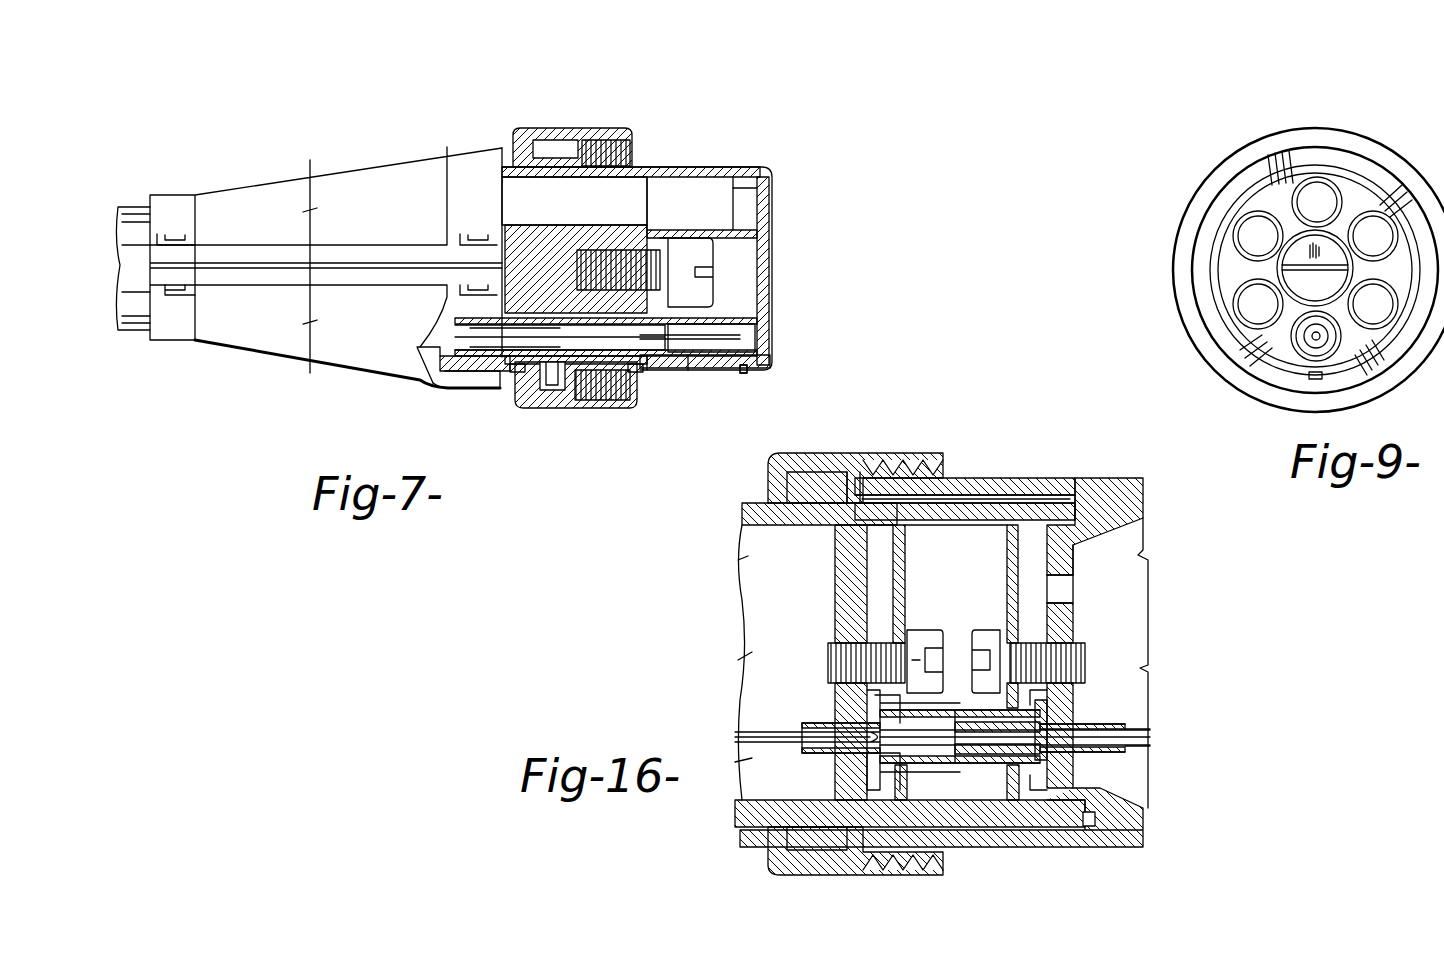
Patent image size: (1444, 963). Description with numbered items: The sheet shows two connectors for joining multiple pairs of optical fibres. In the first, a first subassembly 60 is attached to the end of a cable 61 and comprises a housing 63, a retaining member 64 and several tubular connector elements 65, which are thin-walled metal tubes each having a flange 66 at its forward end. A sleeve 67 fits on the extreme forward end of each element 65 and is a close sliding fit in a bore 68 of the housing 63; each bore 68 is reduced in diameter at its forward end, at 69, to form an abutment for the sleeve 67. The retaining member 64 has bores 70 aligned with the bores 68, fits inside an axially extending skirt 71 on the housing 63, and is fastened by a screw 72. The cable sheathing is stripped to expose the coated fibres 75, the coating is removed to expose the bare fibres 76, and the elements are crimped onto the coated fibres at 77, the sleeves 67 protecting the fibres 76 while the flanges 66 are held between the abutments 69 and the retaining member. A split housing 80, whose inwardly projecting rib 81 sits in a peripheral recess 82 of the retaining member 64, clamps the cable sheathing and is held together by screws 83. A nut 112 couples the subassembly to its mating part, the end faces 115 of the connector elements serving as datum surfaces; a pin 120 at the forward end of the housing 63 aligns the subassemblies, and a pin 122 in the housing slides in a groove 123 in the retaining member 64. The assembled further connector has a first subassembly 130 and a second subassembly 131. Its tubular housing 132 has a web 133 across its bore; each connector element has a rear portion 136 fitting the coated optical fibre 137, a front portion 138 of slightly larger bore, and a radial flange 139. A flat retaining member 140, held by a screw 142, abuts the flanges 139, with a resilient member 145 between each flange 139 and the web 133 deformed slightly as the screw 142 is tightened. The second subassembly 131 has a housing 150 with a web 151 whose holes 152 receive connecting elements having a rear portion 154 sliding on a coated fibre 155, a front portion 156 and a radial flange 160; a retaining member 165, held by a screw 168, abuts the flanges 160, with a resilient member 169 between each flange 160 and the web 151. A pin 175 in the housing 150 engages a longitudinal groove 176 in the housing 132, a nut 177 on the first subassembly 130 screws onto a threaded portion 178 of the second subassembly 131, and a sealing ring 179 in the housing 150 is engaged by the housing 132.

In FIG. 7, the first subassembly 60 is at (528, 122).
In FIG. 7, the cable 61 is at (140, 332).
In FIG. 7, the housing 63 is at (733, 190).
In FIG. 9, the housing 63 is at (1258, 195).
In FIG. 7, the retaining member 64 is at (650, 180).
In FIG. 7, the tubular connector elements 65 is at (505, 372).
In FIG. 7, the flange 66 is at (658, 372).
In FIG. 7, the sleeve 67 is at (728, 372).
In FIG. 7, the bores 68 is at (738, 186).
In FIG. 7, the abutments 69 is at (768, 322).
In FIG. 7, the bores 70 is at (502, 194).
In FIG. 7, the axially extending skirt 71 is at (560, 155).
In FIG. 7, the screw 72 is at (700, 290).
In FIG. 9, the screw 72 is at (1290, 275).
In FIG. 7, the coated fibres 75 is at (432, 360).
In FIG. 7, the exposed fibres 76 is at (735, 343).
In FIG. 7, the crimp 77 is at (520, 385).
In FIG. 7, the split housing 80 is at (262, 360).
In FIG. 7, the inwardly projecting rib 81 is at (482, 370).
In FIG. 7, the peripheral recess 82 is at (445, 388).
In FIG. 7, the screws 83 is at (190, 236).
In FIG. 7, the nut 112 is at (622, 140).
In FIG. 7, the end faces 115 is at (660, 372).
In FIG. 7, the pin 120 is at (747, 370).
In FIG. 9, the pin 120 is at (1312, 380).
In FIG. 7, the pin 122 is at (550, 392).
In FIG. 7, the groove 123 is at (572, 400).
In FIG. 16, the first subassembly 130 is at (768, 492).
In FIG. 16, the second subassembly 131 is at (1150, 494).
In FIG. 16, the housing 132 is at (1020, 512).
In FIG. 16, the web 133 is at (845, 556).
In FIG. 16, the rear portion 136 is at (815, 723).
In FIG. 16, the coated optical fibre 137 is at (745, 737).
In FIG. 16, the front portion 138 is at (965, 686).
In FIG. 16, the radial flange 139 is at (855, 792).
In FIG. 16, the retaining member 140 is at (905, 530).
In FIG. 16, the screw 142 is at (928, 628).
In FIG. 16, the resilient member 145 is at (748, 668).
In FIG. 16, the housing 150 is at (1052, 498).
In FIG. 16, the web 151 is at (1075, 558).
In FIG. 16, the holes 152 is at (1068, 588).
In FIG. 16, the rear portion 154 is at (1105, 722).
In FIG. 16, the coated fibre 155 is at (1130, 737).
In FIG. 16, the front portion 156 is at (995, 772).
In FIG. 16, the radial flange 160 is at (1098, 786).
In FIG. 16, the retaining member 165 is at (1010, 548).
In FIG. 16, the screw 168 is at (1000, 618).
In FIG. 16, the resilient member 169 is at (1085, 763).
In FIG. 16, the pin 175 is at (858, 470).
In FIG. 16, the longitudinal groove 176 is at (960, 500).
In FIG. 16, the nut 177 is at (880, 456).
In FIG. 16, the threaded portion 178 is at (945, 482).
In FIG. 16, the sealing ring 179 is at (1105, 492).